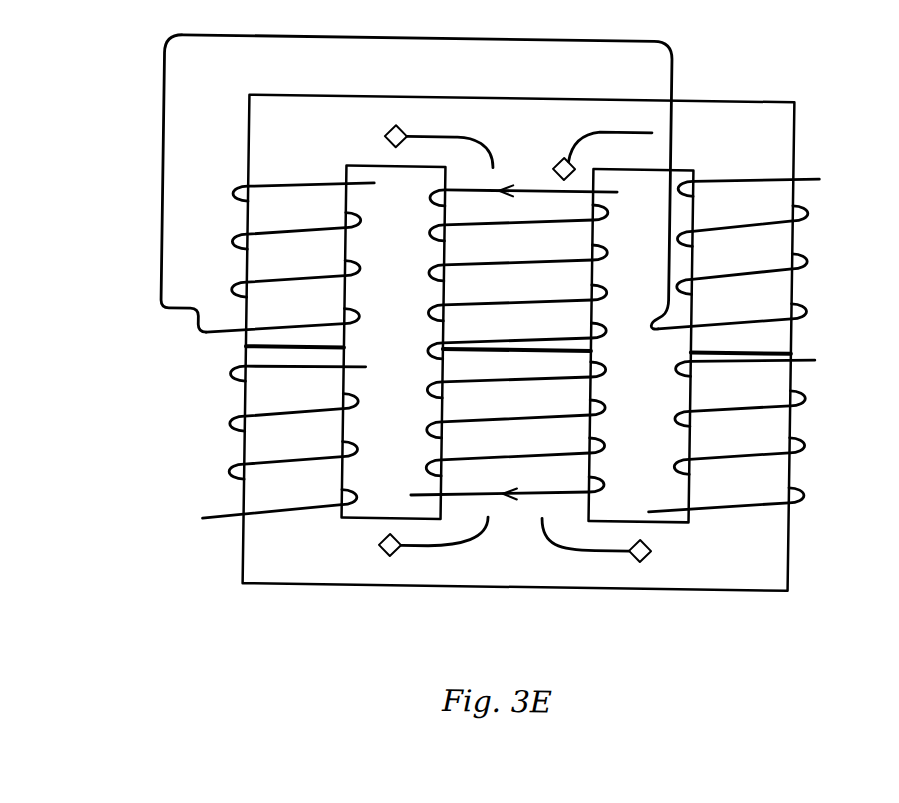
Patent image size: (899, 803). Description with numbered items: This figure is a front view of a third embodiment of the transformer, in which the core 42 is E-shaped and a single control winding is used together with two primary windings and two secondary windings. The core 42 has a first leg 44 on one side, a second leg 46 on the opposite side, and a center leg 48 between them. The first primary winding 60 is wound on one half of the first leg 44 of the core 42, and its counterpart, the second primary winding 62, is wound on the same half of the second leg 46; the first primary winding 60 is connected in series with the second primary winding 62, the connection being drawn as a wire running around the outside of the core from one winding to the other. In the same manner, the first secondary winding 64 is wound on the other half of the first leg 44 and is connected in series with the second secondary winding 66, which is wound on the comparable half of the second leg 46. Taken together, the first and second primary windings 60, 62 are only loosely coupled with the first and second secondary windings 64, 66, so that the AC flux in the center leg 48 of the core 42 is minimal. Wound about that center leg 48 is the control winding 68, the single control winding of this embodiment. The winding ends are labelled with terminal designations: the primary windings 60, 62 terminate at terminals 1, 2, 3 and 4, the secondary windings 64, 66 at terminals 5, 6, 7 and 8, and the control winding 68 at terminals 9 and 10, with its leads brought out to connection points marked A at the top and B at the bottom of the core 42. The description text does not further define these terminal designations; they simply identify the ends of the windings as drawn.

The core 42 is at (308, 546).
The first leg 44 is at (273, 536).
The second leg 46 is at (725, 525).
The center leg 48 is at (510, 513).
The first primary winding 60 is at (285, 186).
The second primary winding 62 is at (740, 175).
The first secondary winding 64 is at (287, 369).
The second secondary winding 66 is at (749, 454).
The control winding 68 is at (518, 185).
The terminal 1 is at (317, 182).
The terminal 2 is at (265, 334).
The terminal 3 is at (713, 329).
The terminal 4 is at (762, 177).
The terminal 5 is at (263, 515).
The terminal 6 is at (314, 365).
The terminal 7 is at (760, 358).
The terminal 8 is at (711, 513).
The terminal 9 is at (539, 191).
The terminal 10 is at (487, 496).
The winding terminal A is at (447, 134).
The winding terminal B is at (436, 546).